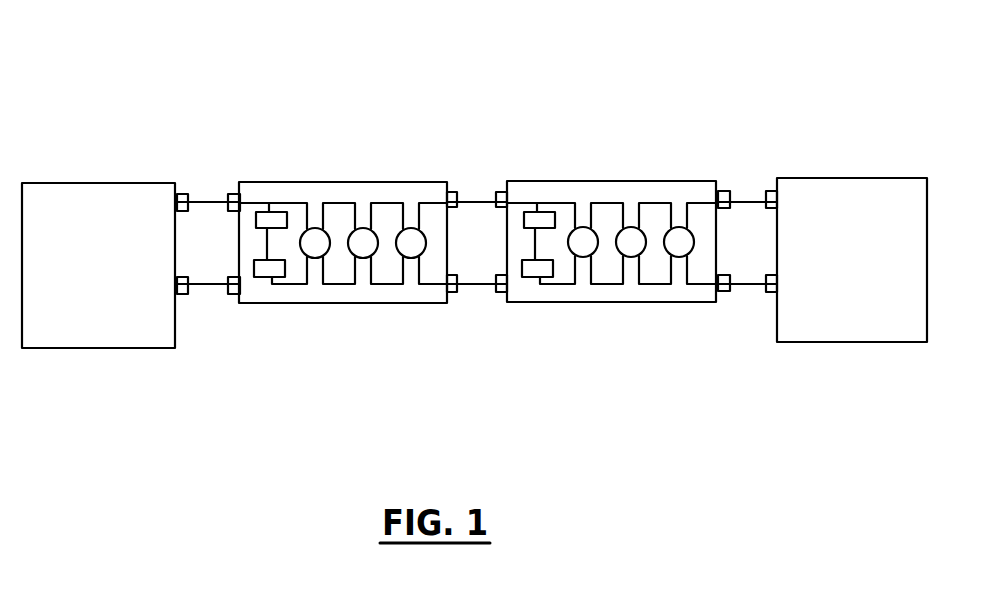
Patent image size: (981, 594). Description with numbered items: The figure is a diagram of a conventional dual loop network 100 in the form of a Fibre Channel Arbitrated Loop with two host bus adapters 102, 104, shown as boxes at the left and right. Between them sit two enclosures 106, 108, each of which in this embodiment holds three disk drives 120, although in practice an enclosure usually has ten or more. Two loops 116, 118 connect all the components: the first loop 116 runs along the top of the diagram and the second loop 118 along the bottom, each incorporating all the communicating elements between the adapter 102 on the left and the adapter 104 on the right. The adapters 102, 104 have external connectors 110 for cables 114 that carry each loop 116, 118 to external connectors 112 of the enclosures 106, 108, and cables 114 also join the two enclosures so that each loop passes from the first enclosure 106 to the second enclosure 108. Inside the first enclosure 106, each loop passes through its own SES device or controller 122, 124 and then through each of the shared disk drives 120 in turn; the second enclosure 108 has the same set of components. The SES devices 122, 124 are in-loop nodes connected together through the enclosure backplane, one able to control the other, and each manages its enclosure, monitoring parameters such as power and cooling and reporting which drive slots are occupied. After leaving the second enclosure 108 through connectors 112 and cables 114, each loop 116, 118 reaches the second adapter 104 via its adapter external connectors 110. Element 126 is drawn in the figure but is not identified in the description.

The loop network 100 is at (142, 78).
The host bus adapter 102 is at (72, 183).
The host bus adapter 104 is at (915, 150).
The enclosure 106 is at (348, 182).
The enclosure 108 is at (630, 181).
The adapter external connector 110 is at (185, 194).
The enclosure external connector 112 is at (232, 194).
The cable 114 is at (205, 202).
The first loop 116 is at (351, 203).
The second loop 118 is at (342, 284).
The disk drive 120 is at (420, 229).
The SES device 122 is at (281, 213).
The SES device 124 is at (271, 268).
The conductor of second module 126 is at (540, 202).